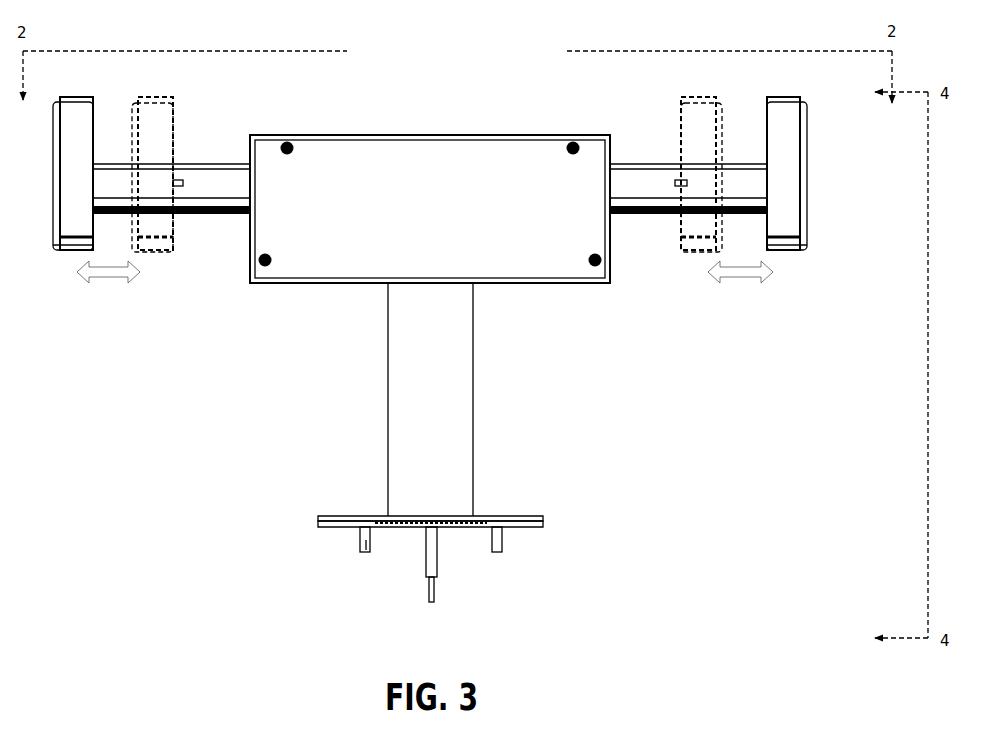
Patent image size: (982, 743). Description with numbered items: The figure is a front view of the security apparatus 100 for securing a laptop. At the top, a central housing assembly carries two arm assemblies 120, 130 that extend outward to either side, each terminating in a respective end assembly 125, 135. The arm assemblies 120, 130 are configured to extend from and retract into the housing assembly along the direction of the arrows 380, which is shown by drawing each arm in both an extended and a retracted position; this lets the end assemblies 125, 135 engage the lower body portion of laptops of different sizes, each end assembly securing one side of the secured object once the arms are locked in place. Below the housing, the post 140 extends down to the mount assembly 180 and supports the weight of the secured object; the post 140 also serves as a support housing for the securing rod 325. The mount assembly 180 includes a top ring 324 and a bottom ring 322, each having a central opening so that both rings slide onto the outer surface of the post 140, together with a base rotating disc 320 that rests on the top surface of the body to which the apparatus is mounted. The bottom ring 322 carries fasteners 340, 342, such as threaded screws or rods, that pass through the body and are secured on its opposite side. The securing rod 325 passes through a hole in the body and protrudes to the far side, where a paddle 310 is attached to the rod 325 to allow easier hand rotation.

The security apparatus 100 is at (448, 88).
The arm assembly 120 is at (638, 156).
The end assembly 125 is at (819, 83).
The arm assembly 130 is at (197, 146).
The end assembly 135 is at (78, 84).
The post 140 is at (473, 389).
The mount assembly 180 is at (460, 538).
The paddle 310 is at (436, 584).
The base rotating disc 320 is at (400, 527).
The bottom ring 322 is at (538, 527).
The top ring 324 is at (543, 516).
The securing rod 325 is at (437, 544).
The fastener 340 is at (360, 545).
The fastener 342 is at (500, 550).
The arrows 380 is at (137, 272).